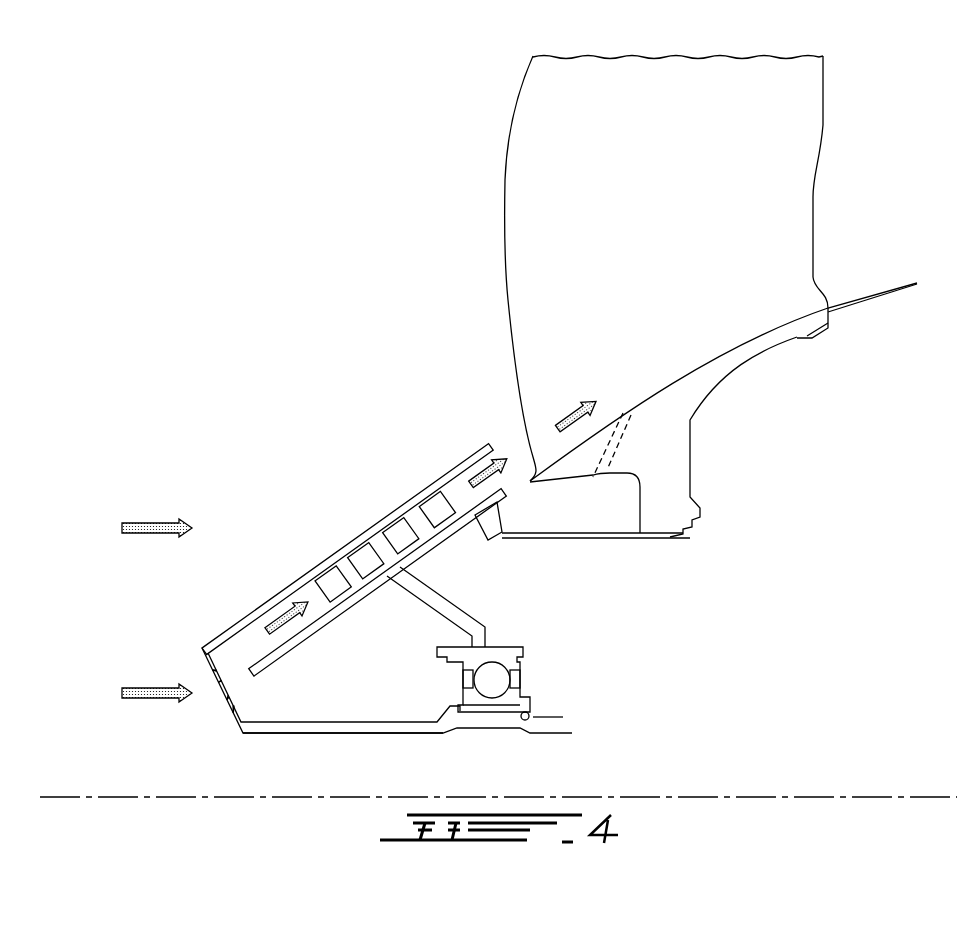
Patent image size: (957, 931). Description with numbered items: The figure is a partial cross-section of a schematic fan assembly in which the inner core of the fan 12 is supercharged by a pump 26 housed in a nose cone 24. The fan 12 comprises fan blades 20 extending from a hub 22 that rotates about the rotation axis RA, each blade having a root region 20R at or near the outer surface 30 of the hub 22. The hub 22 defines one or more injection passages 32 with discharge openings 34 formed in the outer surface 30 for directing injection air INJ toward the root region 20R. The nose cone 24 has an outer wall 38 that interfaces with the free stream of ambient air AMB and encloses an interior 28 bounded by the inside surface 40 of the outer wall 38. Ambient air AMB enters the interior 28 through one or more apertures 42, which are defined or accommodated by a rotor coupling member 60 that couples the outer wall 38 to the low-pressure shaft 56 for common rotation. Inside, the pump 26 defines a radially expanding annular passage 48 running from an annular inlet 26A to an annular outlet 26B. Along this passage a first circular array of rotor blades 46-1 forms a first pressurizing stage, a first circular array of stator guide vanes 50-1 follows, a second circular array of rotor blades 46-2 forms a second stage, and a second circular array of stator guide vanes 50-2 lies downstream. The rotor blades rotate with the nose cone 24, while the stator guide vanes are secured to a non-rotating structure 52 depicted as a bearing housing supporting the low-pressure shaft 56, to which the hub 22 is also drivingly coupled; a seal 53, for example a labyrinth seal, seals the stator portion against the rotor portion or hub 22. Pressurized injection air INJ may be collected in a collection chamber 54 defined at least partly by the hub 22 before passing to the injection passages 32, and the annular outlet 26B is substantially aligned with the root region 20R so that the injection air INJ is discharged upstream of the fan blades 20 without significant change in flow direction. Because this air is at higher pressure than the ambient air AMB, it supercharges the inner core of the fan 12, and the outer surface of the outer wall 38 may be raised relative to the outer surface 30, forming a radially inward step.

The fan 12 is at (427, 247).
The fan blades 20 is at (677, 201).
The root region 20R is at (555, 358).
The hub 22 is at (689, 402).
The nose cone 24 is at (201, 647).
The pump 26 is at (373, 615).
The inlet 26A is at (378, 582).
The outlet 26B is at (347, 549).
The interior 28 is at (345, 697).
The outer surface 30 is at (787, 323).
The injection passages 32 is at (603, 443).
The discharge openings 34 is at (633, 418).
The outer wall 38 is at (250, 604).
The inside surface 40 is at (288, 616).
The apertures 42 is at (219, 688).
The first circular array of rotor blades 46-1 is at (333, 584).
The second circular array of rotor blades 46-2 is at (401, 535).
The annular passage 48 is at (305, 592).
The first circular array of stator guide vanes 50-1 is at (366, 561).
The second circular array of stator guide vanes 50-2 is at (438, 510).
The non-rotating structure 52 is at (521, 658).
The seal 53 is at (503, 537).
The collection chamber 54 is at (595, 505).
The low-pressure shaft 56 is at (450, 723).
The rotor coupling member 60 is at (233, 712).
The injection air INJ is at (463, 460).
The ambient air AMB is at (137, 533).
The rotation axis RA is at (815, 796).